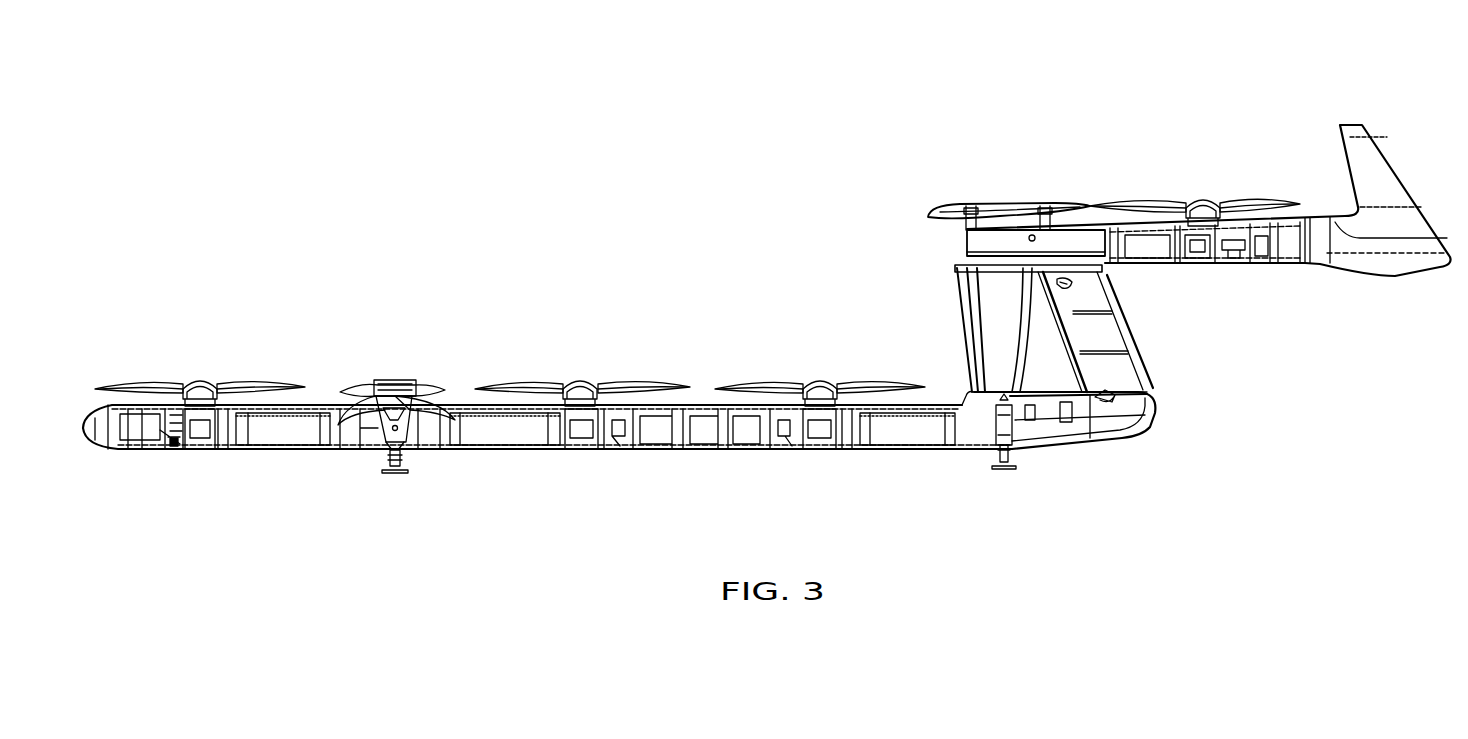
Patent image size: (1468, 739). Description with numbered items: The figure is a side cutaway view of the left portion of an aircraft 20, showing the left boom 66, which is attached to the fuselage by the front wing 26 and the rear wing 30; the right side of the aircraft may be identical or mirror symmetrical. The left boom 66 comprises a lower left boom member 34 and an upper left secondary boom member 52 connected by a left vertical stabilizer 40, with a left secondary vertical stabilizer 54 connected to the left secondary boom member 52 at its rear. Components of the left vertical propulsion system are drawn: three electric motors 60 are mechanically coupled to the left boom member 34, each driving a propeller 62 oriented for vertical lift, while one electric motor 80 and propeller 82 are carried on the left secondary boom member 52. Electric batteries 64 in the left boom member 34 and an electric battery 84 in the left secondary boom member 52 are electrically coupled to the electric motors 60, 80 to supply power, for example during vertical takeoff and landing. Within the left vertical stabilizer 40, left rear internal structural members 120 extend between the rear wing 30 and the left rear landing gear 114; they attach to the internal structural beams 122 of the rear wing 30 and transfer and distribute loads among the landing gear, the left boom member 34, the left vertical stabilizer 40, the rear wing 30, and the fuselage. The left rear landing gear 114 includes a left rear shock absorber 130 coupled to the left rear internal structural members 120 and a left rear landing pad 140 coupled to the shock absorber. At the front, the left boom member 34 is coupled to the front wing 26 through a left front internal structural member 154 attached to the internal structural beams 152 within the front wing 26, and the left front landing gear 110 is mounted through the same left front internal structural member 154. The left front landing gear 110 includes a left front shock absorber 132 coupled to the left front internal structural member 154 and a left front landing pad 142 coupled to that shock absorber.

The aircraft 20 is at (548, 100).
The front wing 26 is at (365, 387).
The rear wing 30 is at (935, 210).
The left boom member 34 is at (703, 460).
The left vertical stabilizer 40 is at (955, 288).
The left secondary boom member 52 is at (1160, 266).
The left secondary vertical stabilizer 54 is at (1385, 277).
The electric motor 60 is at (200, 384).
The propeller 62 is at (262, 385).
The electric battery 64 is at (270, 440).
The left boom 66 is at (627, 350).
The electric motor 80 is at (1205, 205).
The propeller 82 is at (1160, 200).
The electric battery 84 is at (975, 240).
The left front landing gear 110 is at (384, 452).
The left rear landing gear 114 is at (1024, 455).
The left rear internal structural members 120 is at (1010, 316).
The internal structural beams 122 is at (972, 206).
The left rear shock absorber 130 is at (993, 440).
The left front shock absorber 132 is at (403, 450).
The left rear landing pad 140 is at (1003, 470).
The left front landing pad 142 is at (398, 474).
The internal structural beams 152 is at (393, 386).
The left front internal structural member 154 is at (413, 395).